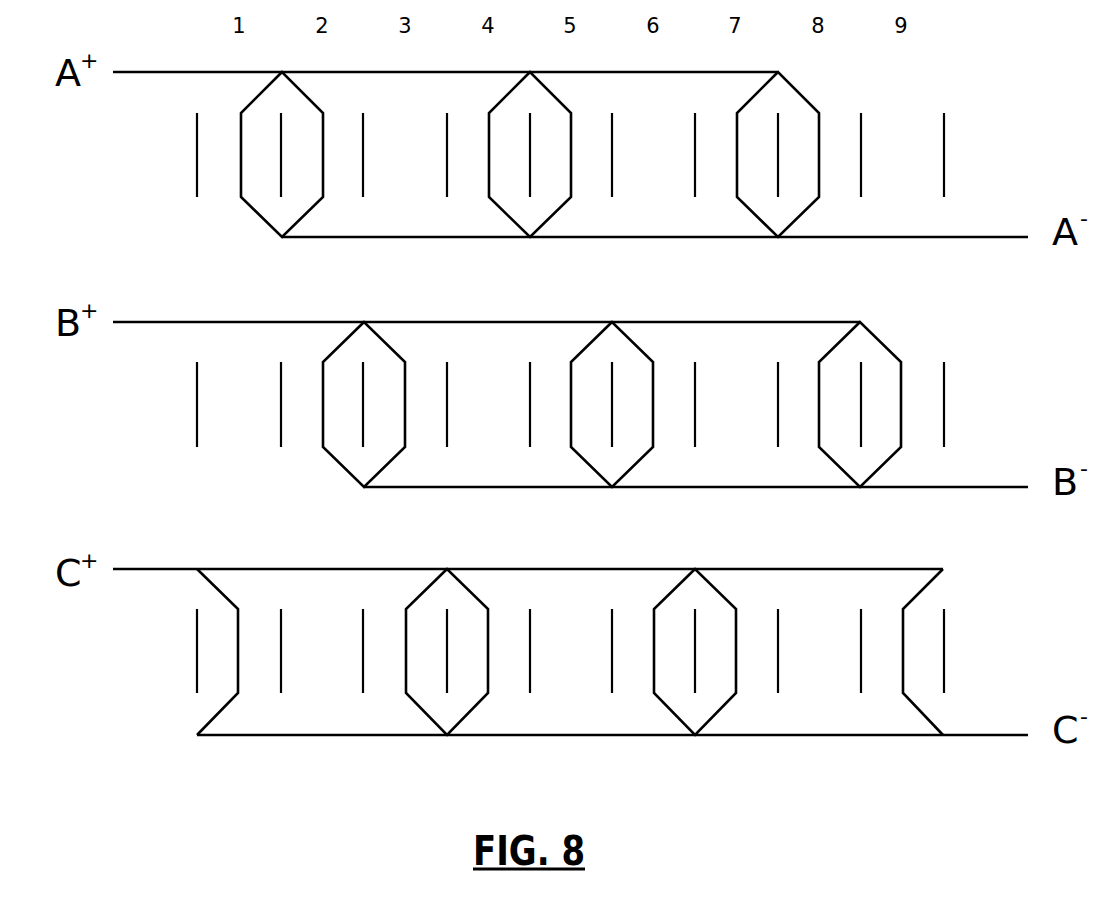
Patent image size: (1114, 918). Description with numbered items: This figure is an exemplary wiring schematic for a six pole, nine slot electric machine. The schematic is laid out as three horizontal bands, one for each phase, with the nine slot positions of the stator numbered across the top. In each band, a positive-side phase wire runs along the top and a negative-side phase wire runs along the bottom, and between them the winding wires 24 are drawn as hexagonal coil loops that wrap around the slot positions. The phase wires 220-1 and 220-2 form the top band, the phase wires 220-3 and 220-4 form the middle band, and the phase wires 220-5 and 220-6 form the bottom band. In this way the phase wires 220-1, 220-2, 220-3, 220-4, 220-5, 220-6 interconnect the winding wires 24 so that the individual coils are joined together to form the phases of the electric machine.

The winding wires 24 is at (317, 108).
The phase wire 220-1 is at (197, 70).
The phase wire 220-2 is at (485, 238).
The phase wire 220-3 is at (197, 320).
The phase wire 220-4 is at (509, 487).
The phase wire 220-5 is at (220, 567).
The phase wire 220-6 is at (498, 735).